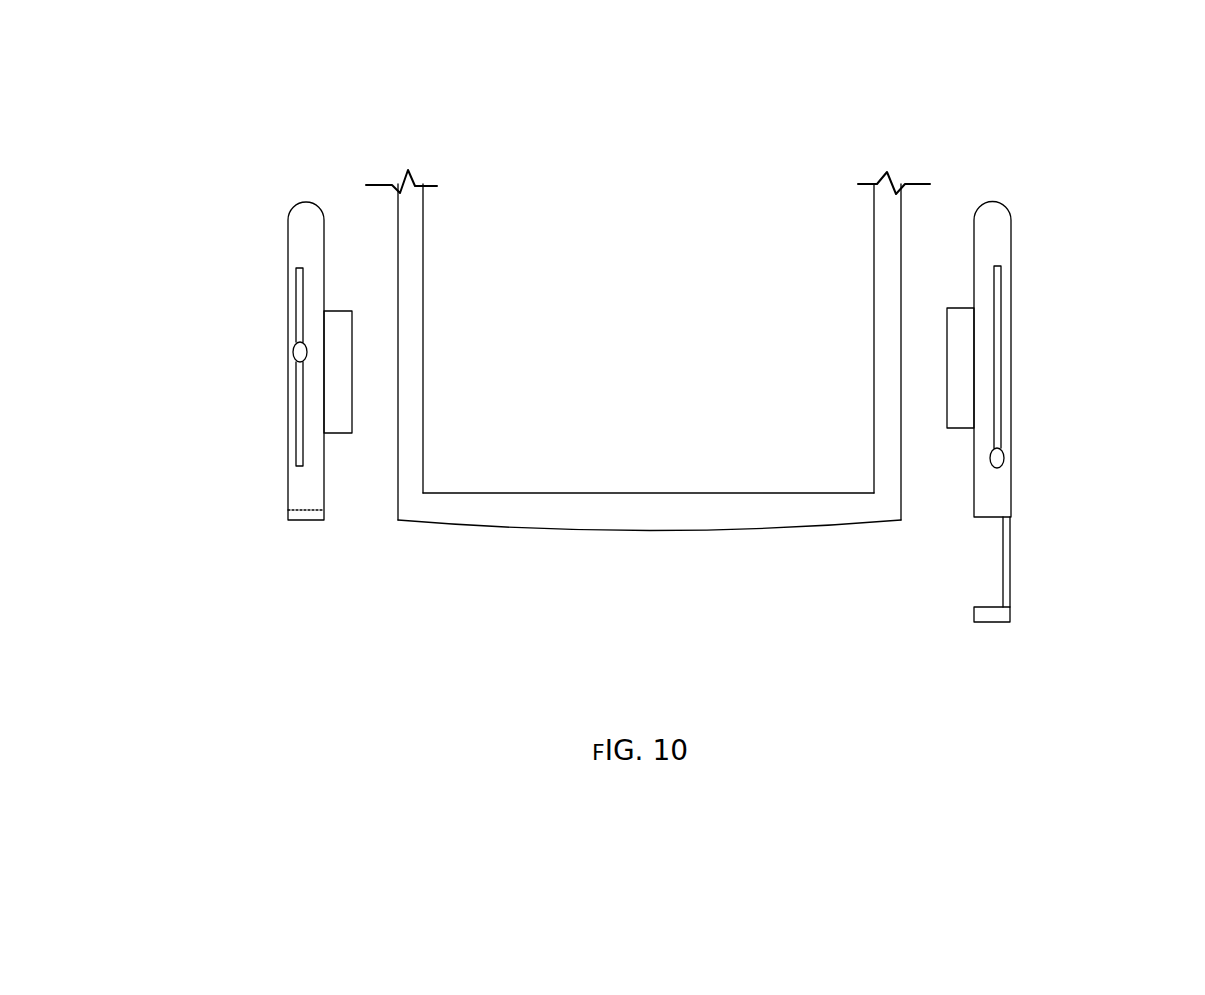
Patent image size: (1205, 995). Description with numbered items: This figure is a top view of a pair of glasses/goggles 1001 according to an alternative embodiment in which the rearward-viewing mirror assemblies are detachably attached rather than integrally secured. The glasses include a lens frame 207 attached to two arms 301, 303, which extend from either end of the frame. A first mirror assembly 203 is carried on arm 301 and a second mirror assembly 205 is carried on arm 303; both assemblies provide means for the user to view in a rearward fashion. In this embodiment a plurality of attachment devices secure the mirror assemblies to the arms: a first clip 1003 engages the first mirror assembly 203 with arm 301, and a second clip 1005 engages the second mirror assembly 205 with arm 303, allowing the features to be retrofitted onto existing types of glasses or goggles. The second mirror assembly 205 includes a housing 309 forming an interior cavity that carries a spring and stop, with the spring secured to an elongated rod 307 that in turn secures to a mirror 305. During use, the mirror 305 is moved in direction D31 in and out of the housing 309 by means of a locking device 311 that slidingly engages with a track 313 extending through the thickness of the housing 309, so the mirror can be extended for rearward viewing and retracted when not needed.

The glasses/goggles 1001 is at (1040, 84).
The first mirror assembly 203 is at (208, 268).
The second mirror assembly 205 is at (1056, 283).
The arm 301 is at (423, 288).
The arm 303 is at (874, 322).
The lens frame 207 is at (550, 530).
The first clip 1003 is at (352, 384).
The second clip 1005 is at (947, 365).
The direction D31 is at (1062, 437).
The locking device 311 is at (1004, 458).
The track 313 is at (990, 467).
The housing 309 is at (1011, 485).
The elongated rod 307 is at (1010, 562).
The mirror 305 is at (1008, 622).